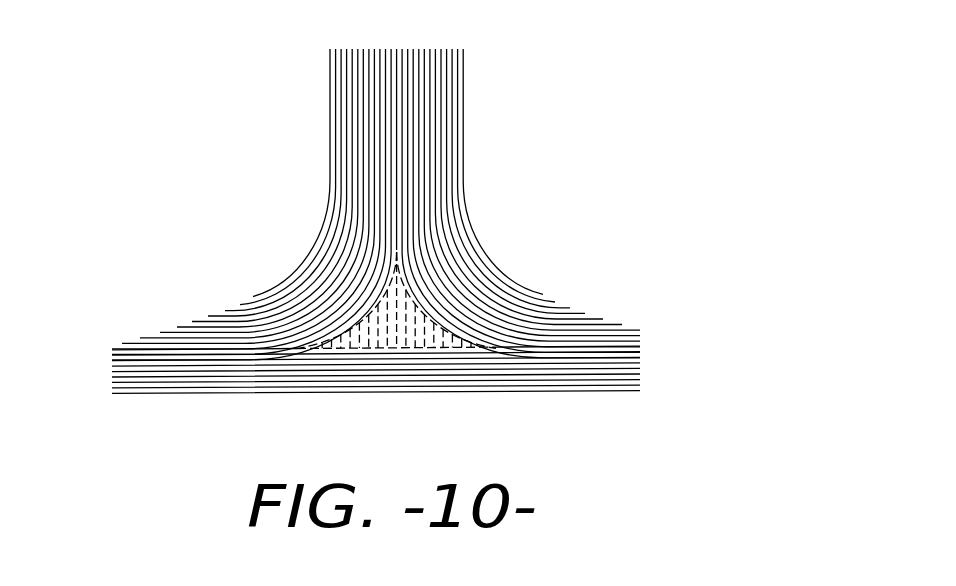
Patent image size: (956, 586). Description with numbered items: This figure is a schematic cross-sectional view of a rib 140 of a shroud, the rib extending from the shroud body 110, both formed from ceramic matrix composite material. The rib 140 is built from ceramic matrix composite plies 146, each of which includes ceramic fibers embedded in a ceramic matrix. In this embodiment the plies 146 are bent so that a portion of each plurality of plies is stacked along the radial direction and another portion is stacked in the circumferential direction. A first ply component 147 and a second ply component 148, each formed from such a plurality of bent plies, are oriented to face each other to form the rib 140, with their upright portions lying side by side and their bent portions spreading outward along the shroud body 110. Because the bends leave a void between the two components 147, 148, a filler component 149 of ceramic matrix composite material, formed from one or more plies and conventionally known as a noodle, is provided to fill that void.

The shroud body 110 is at (658, 355).
The rib 140 is at (376, 189).
The ceramic matrix composite plies 146 is at (332, 75).
The first ply component 147 is at (310, 243).
The second ply component 148 is at (485, 242).
The filler component 149 is at (437, 336).